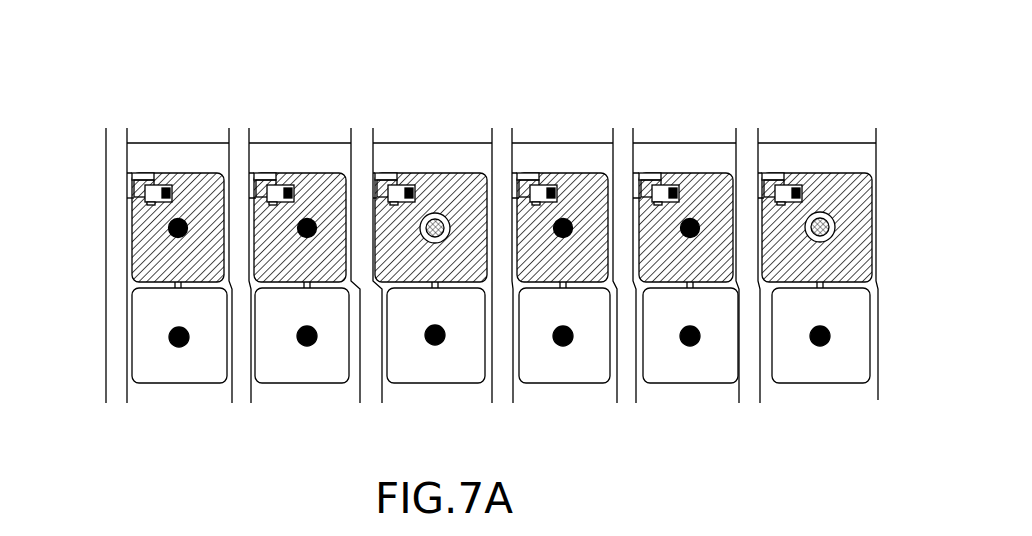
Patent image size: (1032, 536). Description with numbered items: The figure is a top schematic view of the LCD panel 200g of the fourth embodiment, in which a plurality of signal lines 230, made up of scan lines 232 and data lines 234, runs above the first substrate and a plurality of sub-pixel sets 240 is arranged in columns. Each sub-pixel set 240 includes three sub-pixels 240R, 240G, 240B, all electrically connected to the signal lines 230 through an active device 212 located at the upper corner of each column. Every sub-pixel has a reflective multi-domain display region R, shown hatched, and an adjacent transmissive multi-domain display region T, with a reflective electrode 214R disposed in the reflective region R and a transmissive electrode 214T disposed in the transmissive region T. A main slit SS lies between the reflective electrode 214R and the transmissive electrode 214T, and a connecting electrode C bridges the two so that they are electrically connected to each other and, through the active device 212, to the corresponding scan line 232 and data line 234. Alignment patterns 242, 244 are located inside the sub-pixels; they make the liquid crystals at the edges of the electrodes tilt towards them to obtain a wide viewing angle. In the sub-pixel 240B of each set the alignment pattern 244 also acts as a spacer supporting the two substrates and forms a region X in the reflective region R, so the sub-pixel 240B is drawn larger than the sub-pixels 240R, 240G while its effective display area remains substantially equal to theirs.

The LCD panel 200g is at (796, 467).
The active device 212 is at (130, 198).
The reflective electrode 214R is at (147, 274).
The transmissive electrode 214T is at (148, 330).
The signal lines 230 is at (128, 60).
The scan line 232 is at (140, 158).
The data line 234 is at (117, 143).
The sub-pixel set 240 is at (425, 63).
The sub-pixel 240R is at (229, 122).
The sub-pixel 240G is at (351, 122).
The sub-pixel 240B is at (492, 122).
The alignment pattern 242 is at (175, 345).
The alignment pattern 244 is at (445, 235).
The region X is at (428, 238).
The connecting electrode C is at (690, 285).
The main slit SS is at (708, 302).
The reflective multi-domain display region R is at (882, 175).
The transmissive multi-domain display region T is at (882, 283).